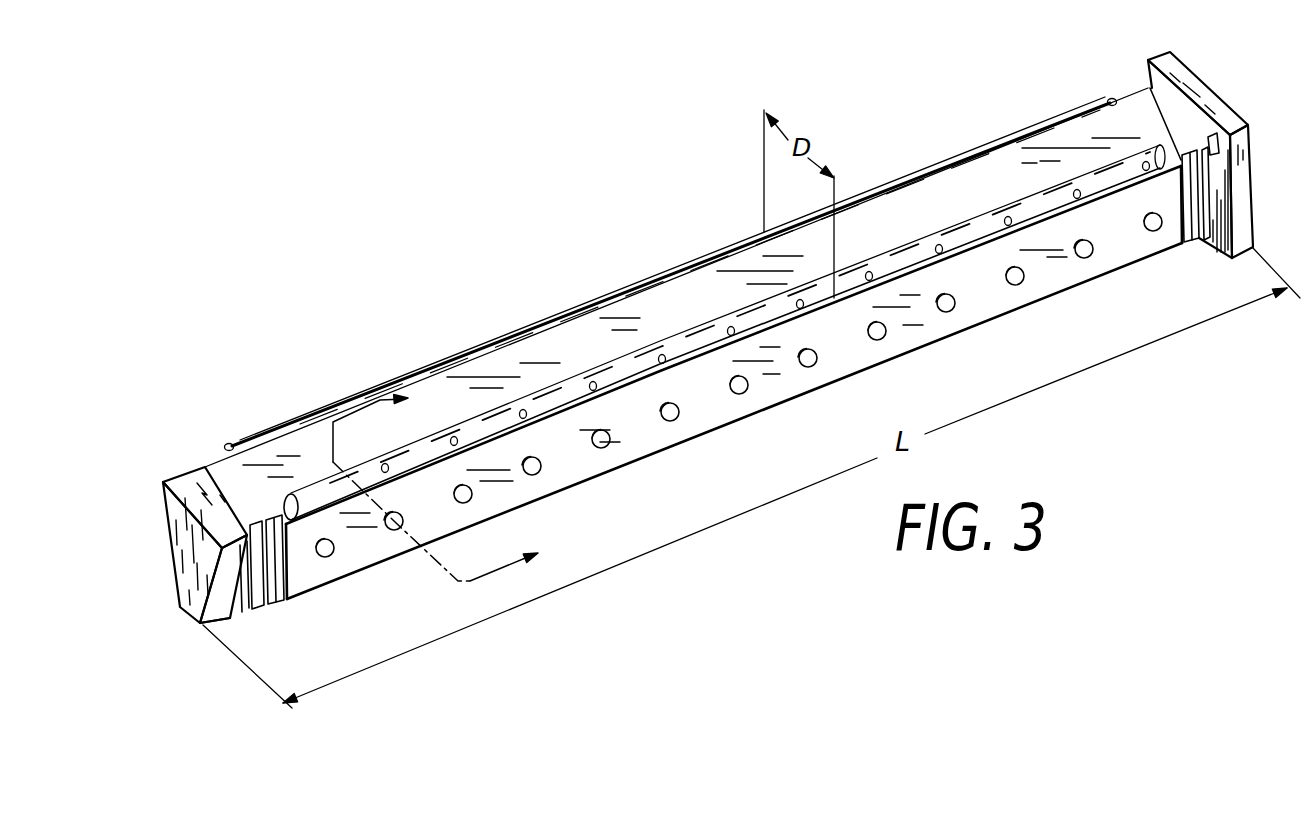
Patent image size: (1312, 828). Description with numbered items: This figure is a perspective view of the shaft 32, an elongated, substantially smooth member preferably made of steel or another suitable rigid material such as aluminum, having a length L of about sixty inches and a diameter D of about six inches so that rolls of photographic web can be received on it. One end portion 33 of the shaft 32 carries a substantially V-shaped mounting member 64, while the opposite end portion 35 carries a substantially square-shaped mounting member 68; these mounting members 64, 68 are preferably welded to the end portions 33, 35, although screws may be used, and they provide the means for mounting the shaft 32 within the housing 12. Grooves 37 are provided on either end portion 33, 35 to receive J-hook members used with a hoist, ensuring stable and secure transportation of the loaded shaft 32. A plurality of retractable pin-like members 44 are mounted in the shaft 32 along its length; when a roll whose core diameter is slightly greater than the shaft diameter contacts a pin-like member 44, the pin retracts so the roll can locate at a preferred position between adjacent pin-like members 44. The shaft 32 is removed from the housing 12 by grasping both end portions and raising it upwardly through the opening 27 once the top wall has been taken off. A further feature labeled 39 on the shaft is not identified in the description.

The housing 12 is at (457, 480).
The opening 27 is at (263, 433).
The shaft 32 is at (421, 168).
The end portion 33 is at (236, 609).
The opposite end portion 35 is at (1238, 114).
The grooves 37 is at (273, 567).
The rail hole 39 is at (660, 355).
The retractable pin-like members 44 is at (1152, 233).
The V-shaped mounting member 64 is at (174, 547).
The square-shaped mounting member 68 is at (1247, 176).